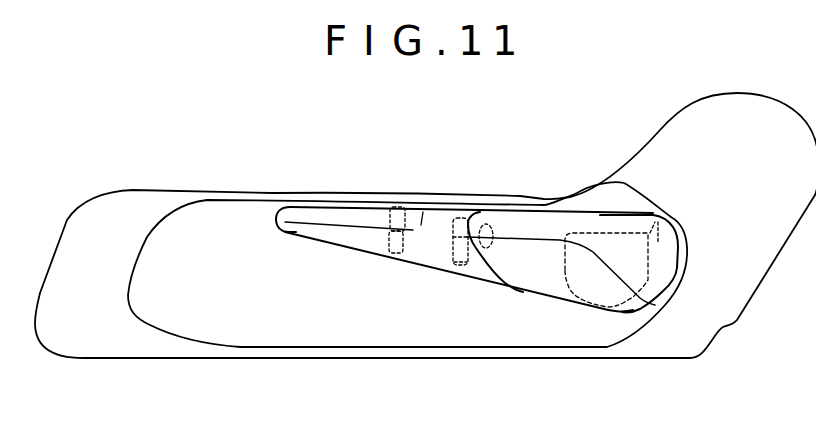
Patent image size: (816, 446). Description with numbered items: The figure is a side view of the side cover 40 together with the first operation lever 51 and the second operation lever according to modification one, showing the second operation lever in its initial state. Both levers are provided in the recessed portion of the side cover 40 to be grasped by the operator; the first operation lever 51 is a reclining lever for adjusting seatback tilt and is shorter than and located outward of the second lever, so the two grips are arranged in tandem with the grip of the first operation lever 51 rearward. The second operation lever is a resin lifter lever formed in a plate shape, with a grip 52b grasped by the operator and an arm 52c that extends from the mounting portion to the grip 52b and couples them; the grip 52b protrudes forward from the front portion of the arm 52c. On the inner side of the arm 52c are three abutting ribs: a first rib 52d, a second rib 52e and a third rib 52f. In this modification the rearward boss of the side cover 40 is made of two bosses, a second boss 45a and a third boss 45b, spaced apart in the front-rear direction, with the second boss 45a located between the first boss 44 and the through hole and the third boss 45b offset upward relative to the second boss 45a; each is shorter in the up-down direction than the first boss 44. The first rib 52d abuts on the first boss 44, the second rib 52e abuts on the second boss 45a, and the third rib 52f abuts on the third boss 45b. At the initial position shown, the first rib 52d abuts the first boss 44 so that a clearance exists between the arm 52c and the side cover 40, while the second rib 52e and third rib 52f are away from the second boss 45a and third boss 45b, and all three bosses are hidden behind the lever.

The side cover 40 is at (202, 213).
The first boss 44 is at (395, 221).
The second boss 45a is at (461, 270).
The third boss 45b is at (485, 222).
The first operation lever 51 is at (603, 250).
The grip 52b is at (335, 217).
The arm 52c is at (358, 239).
The first rib 52d is at (398, 223).
The second rib 52e is at (465, 213).
The third rib 52f is at (479, 267).